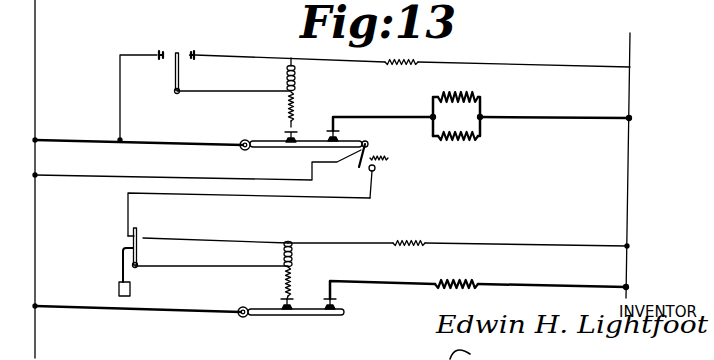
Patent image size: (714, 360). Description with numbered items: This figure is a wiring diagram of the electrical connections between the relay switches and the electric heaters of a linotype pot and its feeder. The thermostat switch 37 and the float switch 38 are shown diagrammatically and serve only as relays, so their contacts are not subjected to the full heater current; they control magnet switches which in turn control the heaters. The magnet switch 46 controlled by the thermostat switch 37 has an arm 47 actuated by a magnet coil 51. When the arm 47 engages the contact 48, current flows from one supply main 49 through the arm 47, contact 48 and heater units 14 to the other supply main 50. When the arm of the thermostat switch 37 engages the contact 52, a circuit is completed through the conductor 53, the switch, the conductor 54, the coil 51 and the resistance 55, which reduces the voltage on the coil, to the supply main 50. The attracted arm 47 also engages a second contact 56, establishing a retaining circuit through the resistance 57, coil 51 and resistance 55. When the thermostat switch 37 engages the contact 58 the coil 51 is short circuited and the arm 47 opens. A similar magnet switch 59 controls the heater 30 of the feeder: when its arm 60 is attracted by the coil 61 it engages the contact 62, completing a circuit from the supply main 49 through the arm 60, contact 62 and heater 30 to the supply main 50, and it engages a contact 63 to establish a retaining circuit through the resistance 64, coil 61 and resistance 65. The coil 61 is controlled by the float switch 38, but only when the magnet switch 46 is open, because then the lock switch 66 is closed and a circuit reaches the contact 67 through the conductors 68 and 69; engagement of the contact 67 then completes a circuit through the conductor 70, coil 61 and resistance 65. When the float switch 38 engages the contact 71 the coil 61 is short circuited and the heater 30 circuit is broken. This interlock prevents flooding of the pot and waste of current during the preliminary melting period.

The heater units 14 is at (460, 93).
The heater 30 is at (453, 280).
The thermostat switch 37 is at (180, 70).
The float switch 38 is at (138, 244).
The magnet switch 46 is at (297, 140).
The arm 47 is at (263, 141).
The contact 48 is at (340, 137).
The supply main 49 is at (37, 67).
The supply main 50 is at (630, 95).
The magnet coil 51 is at (298, 80).
The contact 52 is at (166, 50).
The conductor 53 is at (133, 54).
The conductor 54 is at (228, 90).
The resistance 55 is at (405, 64).
The second contact 56 is at (294, 129).
The resistance 57 is at (294, 107).
The contact 58 is at (197, 51).
The magnet switch 59 is at (303, 292).
The arm 60 is at (299, 317).
The coil 61 is at (293, 258).
The contact 62 is at (336, 302).
The contact 63 is at (283, 302).
The resistance 64 is at (293, 283).
The resistance 65 is at (405, 240).
The lock switch 66 is at (370, 152).
The contact 67 is at (126, 235).
The conductor 68 is at (158, 176).
The conductor 69 is at (249, 214).
The conductor 70 is at (203, 266).
The contact 71 is at (146, 238).